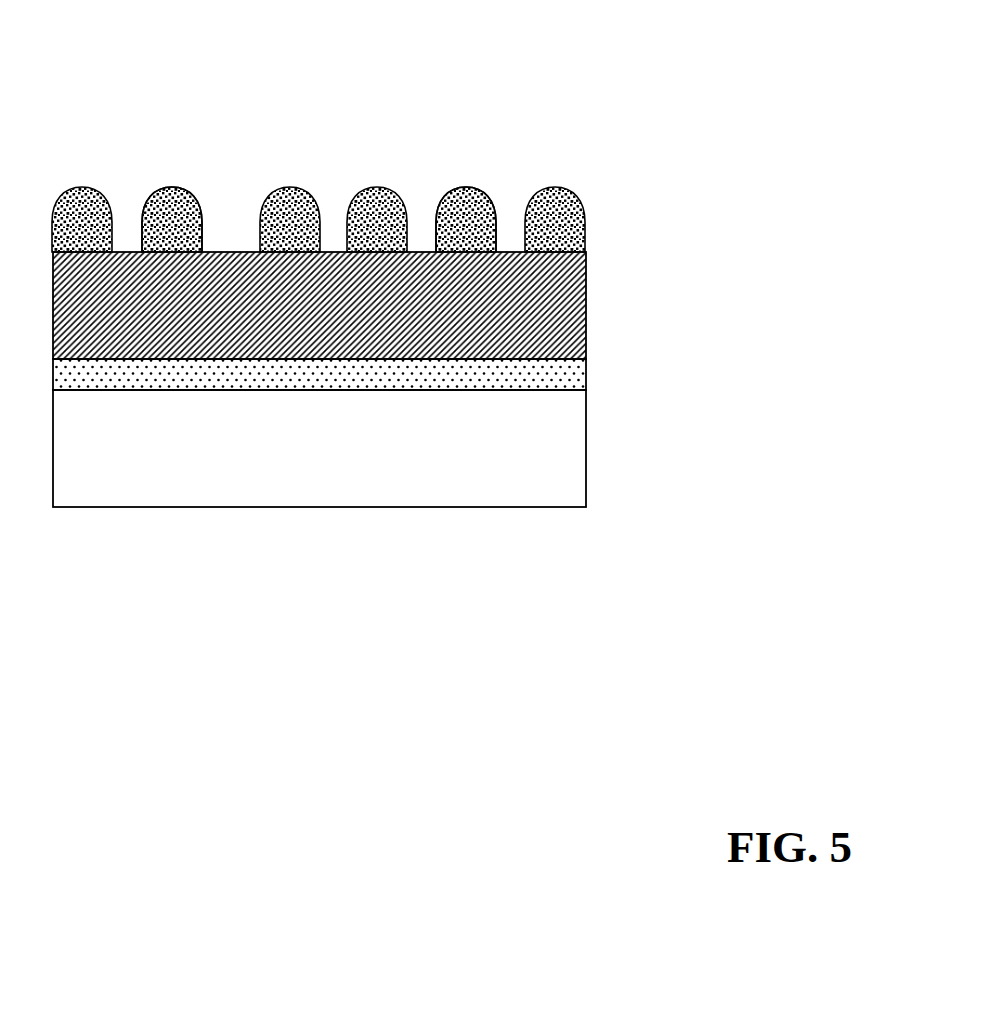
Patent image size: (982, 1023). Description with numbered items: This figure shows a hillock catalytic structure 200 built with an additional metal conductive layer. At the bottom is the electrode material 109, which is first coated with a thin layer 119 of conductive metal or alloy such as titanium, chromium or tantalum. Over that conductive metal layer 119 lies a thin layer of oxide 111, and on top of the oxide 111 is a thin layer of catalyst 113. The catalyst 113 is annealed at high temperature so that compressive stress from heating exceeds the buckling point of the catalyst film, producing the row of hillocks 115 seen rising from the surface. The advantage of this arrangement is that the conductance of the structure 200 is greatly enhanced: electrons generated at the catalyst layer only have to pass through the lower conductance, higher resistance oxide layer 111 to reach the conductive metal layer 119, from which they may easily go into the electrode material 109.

The electrode material 109 is at (319, 448).
The thin layer of conductive metal or alloy 119 is at (586, 370).
The oxide layer 111 is at (586, 274).
The catalyst 113 is at (583, 188).
The hillocks 115 is at (468, 187).
The structure 200 is at (625, 542).